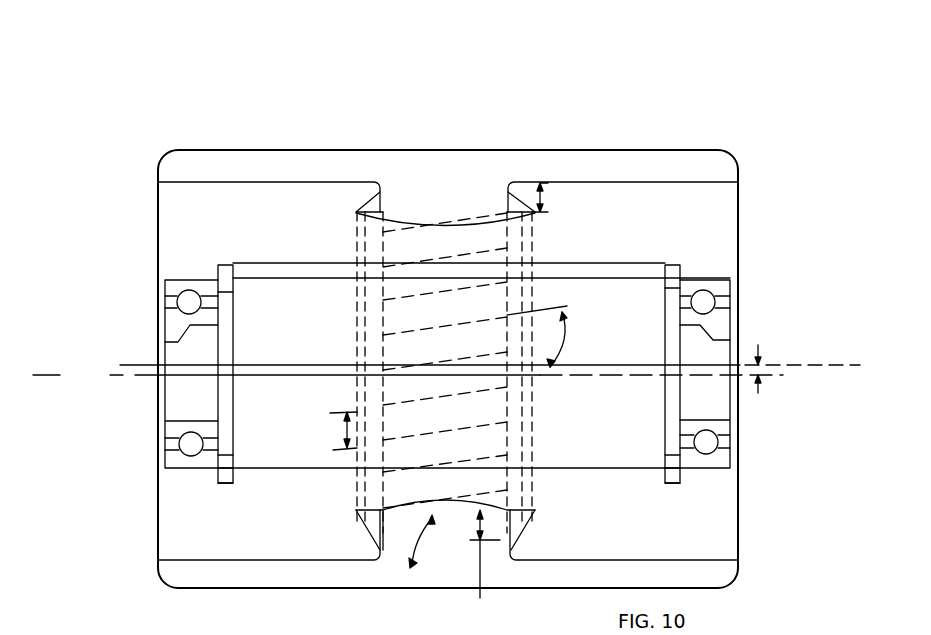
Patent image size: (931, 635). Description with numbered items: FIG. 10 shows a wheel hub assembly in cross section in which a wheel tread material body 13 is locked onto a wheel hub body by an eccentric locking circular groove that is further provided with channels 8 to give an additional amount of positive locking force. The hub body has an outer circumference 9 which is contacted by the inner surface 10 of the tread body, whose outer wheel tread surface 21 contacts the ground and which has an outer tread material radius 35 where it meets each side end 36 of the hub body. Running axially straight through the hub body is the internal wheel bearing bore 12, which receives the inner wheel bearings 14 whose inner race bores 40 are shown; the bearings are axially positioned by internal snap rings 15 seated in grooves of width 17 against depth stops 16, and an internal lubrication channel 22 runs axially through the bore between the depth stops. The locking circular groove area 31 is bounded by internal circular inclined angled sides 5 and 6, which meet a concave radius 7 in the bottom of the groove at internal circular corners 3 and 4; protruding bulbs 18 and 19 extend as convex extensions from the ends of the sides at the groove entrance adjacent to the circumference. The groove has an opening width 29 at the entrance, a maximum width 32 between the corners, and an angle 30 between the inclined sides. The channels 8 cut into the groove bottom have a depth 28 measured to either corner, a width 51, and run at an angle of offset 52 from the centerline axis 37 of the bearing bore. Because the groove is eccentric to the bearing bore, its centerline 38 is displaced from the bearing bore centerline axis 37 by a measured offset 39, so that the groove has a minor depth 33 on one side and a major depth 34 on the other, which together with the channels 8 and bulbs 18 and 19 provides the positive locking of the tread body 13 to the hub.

The internal circular corner 3 is at (358, 212).
The internal circular corner 4 is at (530, 212).
The internal circular inclined angled side 5 is at (382, 193).
The internal circular inclined angled side 6 is at (507, 192).
The concave radius 7 is at (440, 228).
The channel grooves 8 is at (447, 500).
The outer circumference 9 is at (322, 560).
The inner surface of wheel tread body 10 is at (247, 560).
The internal wheel bearing bore 12 is at (603, 468).
The wheel tread material body 13 is at (425, 567).
The inner wheel bearings 14 is at (165, 313).
The internal snap rings 15 is at (225, 265).
The depth stops 16 is at (235, 478).
The groove widths 17 is at (228, 483).
The protruding bulb 18 is at (380, 182).
The protruding bulb 19 is at (507, 182).
The outer wheel tread surface 21 is at (567, 588).
The internal lubrication channel 22 is at (302, 268).
The depth of channels 28 is at (355, 214).
The width of opening 29 is at (507, 313).
The angle between inclined sides 30 is at (447, 523).
The locking circular groove area 31 is at (452, 533).
The maximum width of locking circular groove 32 is at (507, 452).
The minor depth of eccentric locking circular groove 33 is at (541, 197).
The major depth of eccentric locking circular groove 34 is at (484, 564).
The outer tread material radius 35 is at (160, 152).
The side end of wheel hub body 36 is at (158, 515).
The centerline axis of bearing bore 37 is at (82, 377).
The centerline of eccentric locking groove 38 is at (835, 365).
The amount of offset 39 is at (760, 393).
The inner race bore 40 is at (165, 343).
The width of channels 51 is at (345, 431).
The angle of offset of channels 52 is at (567, 338).